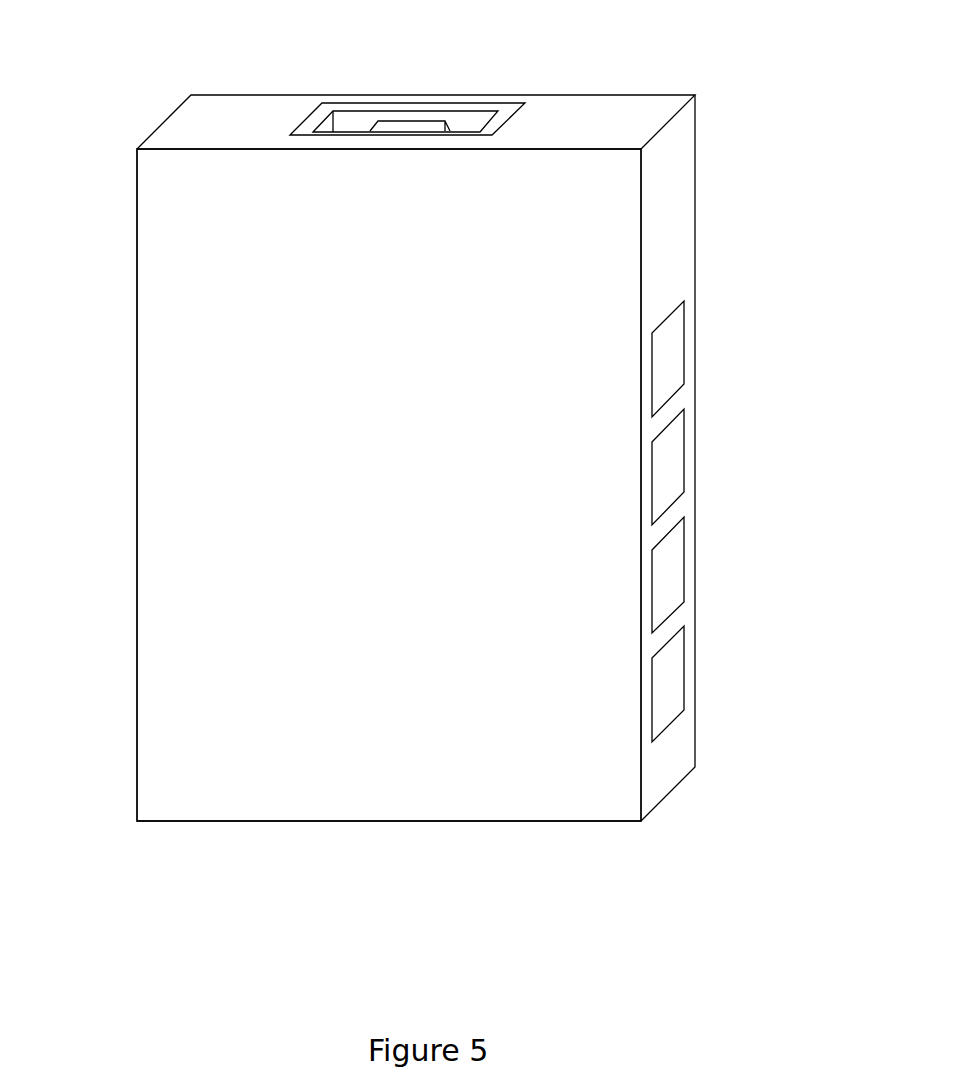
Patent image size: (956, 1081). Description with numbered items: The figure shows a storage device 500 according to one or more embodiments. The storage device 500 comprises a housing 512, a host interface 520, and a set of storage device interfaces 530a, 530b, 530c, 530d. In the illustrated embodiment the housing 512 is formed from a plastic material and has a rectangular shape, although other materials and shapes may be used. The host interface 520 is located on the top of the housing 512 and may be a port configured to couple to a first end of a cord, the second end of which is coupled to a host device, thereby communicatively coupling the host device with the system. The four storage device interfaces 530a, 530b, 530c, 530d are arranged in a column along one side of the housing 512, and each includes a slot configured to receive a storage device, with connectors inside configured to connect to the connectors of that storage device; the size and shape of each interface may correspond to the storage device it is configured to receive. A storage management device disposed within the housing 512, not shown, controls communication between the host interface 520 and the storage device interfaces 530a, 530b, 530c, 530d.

The storage device 500 is at (162, 82).
The housing 512 is at (180, 347).
The host interface 520 is at (360, 118).
The storage device interface 530a is at (672, 363).
The storage device interface 530b is at (672, 474).
The storage device interface 530c is at (672, 588).
The storage device interface 530d is at (672, 692).